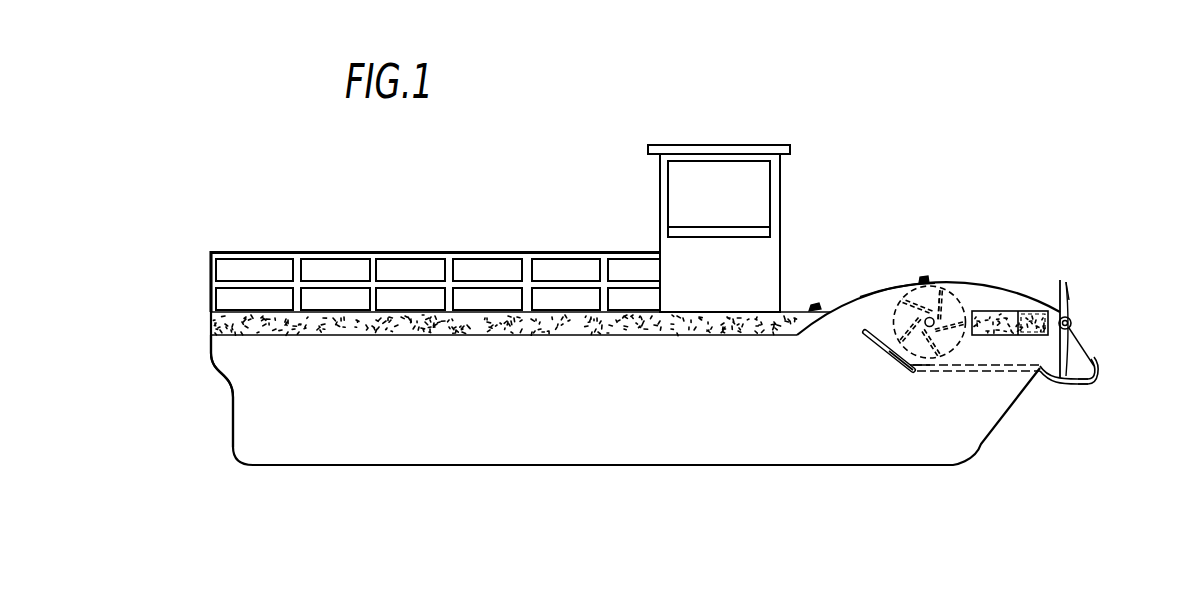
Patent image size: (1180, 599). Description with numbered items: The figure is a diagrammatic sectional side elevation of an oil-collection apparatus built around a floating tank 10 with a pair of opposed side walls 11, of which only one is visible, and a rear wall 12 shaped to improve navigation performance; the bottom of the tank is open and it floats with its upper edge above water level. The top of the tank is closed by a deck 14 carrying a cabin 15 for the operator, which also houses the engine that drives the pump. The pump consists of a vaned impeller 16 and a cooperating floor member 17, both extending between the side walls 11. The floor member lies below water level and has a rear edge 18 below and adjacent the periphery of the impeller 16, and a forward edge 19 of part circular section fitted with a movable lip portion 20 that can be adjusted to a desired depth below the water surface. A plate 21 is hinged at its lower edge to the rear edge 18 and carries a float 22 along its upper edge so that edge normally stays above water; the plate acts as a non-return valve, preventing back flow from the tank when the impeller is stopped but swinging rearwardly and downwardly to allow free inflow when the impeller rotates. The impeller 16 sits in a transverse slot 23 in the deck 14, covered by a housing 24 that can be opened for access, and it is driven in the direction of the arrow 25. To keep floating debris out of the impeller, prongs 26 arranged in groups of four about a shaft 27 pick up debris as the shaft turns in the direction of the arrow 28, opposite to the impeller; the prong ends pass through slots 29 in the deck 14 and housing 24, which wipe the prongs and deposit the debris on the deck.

The tank 10 is at (584, 413).
The side walls 11 is at (429, 464).
The rear wall 12 is at (233, 419).
The deck 14 is at (444, 335).
The cabin 15 is at (706, 282).
The vaned impeller 16 is at (947, 291).
The floor member 17 is at (989, 371).
The rear edge 18 is at (923, 371).
The forward edge 19 is at (1093, 354).
The movable lip portion 20 is at (1088, 373).
The plate 21 is at (891, 355).
The float 22 is at (861, 345).
The transverse slot 23 is at (853, 306).
The housing 24 is at (885, 283).
The arrow 25 is at (934, 297).
The prongs 26 is at (1072, 319).
The shaft 27 is at (1073, 324).
The arrow 28 is at (1098, 303).
The slots 29 is at (1026, 321).